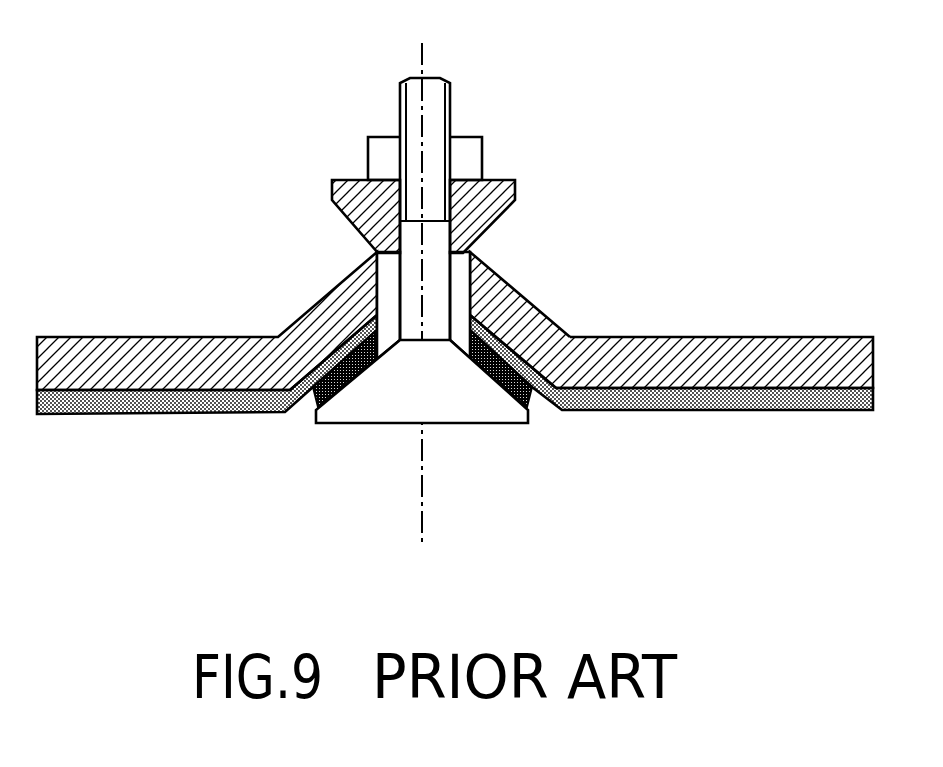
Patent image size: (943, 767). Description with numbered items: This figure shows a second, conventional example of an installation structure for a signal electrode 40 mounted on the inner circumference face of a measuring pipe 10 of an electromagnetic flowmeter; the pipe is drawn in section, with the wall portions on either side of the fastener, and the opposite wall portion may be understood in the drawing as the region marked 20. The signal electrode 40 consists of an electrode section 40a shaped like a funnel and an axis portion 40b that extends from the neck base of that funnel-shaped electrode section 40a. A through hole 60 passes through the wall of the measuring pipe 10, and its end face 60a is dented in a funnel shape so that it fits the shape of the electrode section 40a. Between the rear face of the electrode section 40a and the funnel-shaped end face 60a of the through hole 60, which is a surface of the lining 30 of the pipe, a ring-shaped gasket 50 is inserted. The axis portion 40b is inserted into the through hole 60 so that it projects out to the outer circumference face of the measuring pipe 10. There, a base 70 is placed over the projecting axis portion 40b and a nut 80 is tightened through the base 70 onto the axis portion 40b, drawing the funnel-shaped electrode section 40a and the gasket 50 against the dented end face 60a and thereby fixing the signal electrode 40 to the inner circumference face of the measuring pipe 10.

The measuring pipe 10 is at (207, 290).
The second panel 20 is at (800, 350).
The lining 30 is at (830, 400).
The signal electrode 40 is at (415, 261).
The electrode section 40a is at (361, 410).
The axis portion 40b is at (437, 95).
The gasket 50 is at (330, 345).
The through hole 60 is at (380, 282).
The end face 60a is at (540, 308).
The base 70 is at (513, 200).
The nut 80 is at (380, 152).